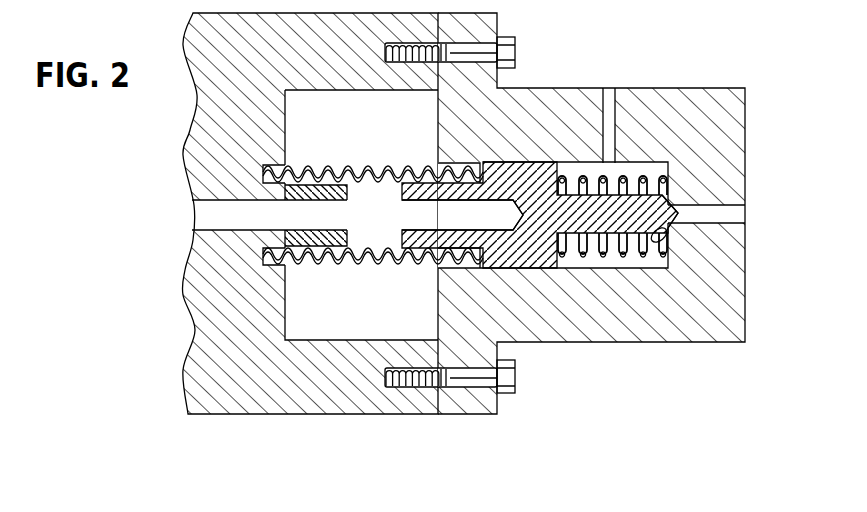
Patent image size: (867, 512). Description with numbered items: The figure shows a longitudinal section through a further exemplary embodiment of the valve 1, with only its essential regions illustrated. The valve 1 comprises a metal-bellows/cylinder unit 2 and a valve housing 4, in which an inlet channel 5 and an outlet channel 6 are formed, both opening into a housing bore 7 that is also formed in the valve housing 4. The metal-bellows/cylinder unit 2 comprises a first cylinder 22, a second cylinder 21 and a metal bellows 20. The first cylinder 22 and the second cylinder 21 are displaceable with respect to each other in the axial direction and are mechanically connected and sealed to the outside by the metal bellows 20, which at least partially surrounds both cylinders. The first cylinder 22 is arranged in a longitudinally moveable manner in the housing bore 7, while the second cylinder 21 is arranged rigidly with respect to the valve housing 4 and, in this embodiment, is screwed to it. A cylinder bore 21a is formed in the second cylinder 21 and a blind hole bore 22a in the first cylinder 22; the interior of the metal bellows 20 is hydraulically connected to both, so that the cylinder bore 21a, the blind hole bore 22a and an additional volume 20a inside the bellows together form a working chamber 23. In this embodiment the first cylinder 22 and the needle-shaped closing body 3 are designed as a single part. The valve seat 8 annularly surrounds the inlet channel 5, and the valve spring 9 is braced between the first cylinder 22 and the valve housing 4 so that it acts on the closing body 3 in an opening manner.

The valve 1 is at (124, 150).
The metal-bellows/cylinder unit 2 is at (359, 430).
The closing body 3 is at (668, 200).
The valve housing 4 is at (570, 308).
The inlet channel 5 is at (728, 215).
The outlet channel 6 is at (610, 93).
The housing bore 7 is at (598, 268).
The valve seat 8 is at (667, 238).
The valve spring 9 is at (646, 178).
The metal bellows 20 is at (380, 265).
The additional volume 20a is at (370, 200).
The second cylinder 21 is at (227, 290).
The cylinder bore 21a is at (220, 213).
The first cylinder 22 is at (530, 178).
The blind hole bore 22a is at (423, 215).
The working chamber 23 is at (328, 217).